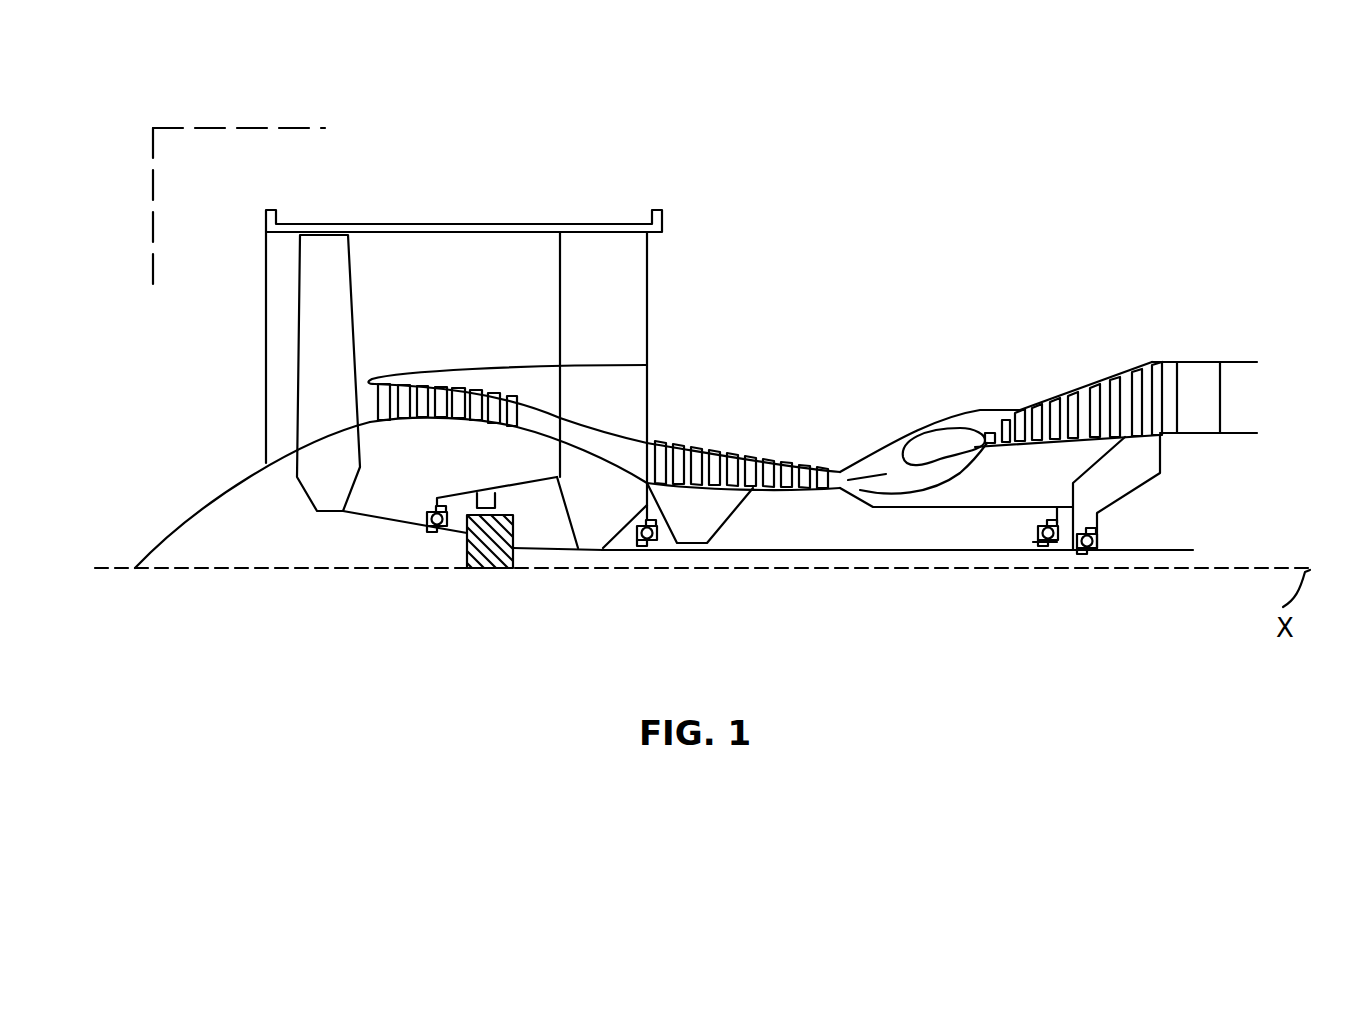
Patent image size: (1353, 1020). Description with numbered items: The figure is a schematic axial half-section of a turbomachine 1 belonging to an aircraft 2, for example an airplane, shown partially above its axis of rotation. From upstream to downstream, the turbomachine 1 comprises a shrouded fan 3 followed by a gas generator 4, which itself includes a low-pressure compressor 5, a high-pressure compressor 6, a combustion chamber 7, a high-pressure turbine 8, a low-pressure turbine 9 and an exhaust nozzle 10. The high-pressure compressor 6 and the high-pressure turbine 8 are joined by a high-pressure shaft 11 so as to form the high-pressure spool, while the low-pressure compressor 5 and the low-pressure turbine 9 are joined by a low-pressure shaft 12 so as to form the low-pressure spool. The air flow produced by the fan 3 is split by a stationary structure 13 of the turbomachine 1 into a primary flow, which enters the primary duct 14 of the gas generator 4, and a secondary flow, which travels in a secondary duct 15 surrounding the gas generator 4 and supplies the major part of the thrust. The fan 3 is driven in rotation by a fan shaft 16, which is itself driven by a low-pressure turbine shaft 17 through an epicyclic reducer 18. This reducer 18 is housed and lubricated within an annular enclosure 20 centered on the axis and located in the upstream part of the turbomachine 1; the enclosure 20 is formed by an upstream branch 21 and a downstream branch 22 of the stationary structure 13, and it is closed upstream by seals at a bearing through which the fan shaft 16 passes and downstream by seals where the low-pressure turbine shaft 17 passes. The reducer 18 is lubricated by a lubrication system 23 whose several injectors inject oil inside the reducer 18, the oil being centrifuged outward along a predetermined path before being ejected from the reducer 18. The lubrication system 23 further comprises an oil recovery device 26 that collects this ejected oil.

The turbomachine 1 is at (237, 213).
The aircraft 2 is at (150, 170).
The shrouded fan 3 is at (318, 375).
The gas generator 4 is at (791, 444).
The low-pressure compressor 5 is at (458, 407).
The high-pressure compressor 6 is at (754, 474).
The combustion chamber 7 is at (938, 448).
The high-pressure turbine 8 is at (1003, 430).
The low-pressure turbine 9 is at (1097, 427).
The exhaust nozzle 10 is at (1242, 398).
The high-pressure shaft 11 is at (901, 510).
The low-pressure shaft 12 is at (848, 556).
The stationary structure 13 is at (526, 378).
The primary duct 14 is at (608, 447).
The secondary duct 15 is at (505, 270).
The fan shaft 16 is at (362, 518).
The low-pressure turbine shaft 17 is at (552, 538).
The epicyclic reducer 18 is at (460, 508).
The annular enclosure 20 is at (533, 537).
The upstream branch 21 is at (461, 552).
The downstream branch 22 is at (540, 538).
The lubrication system 23 is at (508, 501).
The oil recovery device 26 is at (488, 501).